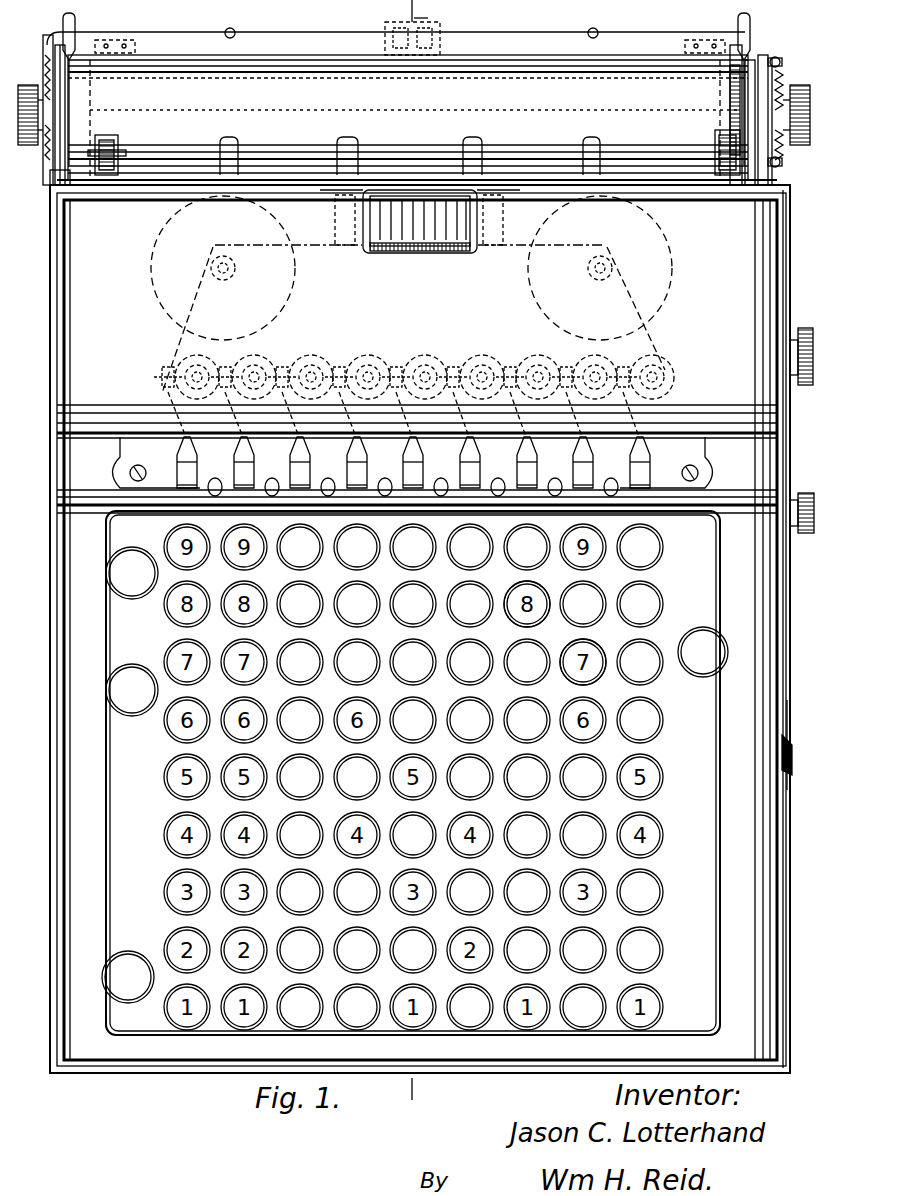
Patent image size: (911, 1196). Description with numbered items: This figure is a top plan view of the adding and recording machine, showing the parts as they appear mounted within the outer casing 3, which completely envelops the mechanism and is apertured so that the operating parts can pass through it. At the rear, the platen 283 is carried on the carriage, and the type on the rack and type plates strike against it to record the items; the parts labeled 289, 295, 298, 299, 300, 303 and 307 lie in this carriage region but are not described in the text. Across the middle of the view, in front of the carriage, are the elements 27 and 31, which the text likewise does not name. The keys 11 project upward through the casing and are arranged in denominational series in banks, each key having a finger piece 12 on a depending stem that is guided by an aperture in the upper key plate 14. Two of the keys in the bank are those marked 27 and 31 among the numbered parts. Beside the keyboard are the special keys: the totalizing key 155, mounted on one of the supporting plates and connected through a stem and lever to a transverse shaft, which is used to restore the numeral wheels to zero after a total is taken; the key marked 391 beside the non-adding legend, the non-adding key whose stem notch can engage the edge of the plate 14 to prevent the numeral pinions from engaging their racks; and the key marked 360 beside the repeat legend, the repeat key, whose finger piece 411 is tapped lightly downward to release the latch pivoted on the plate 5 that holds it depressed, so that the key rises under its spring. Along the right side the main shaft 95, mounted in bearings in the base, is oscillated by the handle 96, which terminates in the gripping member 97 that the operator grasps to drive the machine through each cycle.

The outer casing 3 is at (778, 897).
The supporting plate 5 is at (412, 563).
The keys 11 is at (370, 611).
The finger piece 12 is at (566, 618).
The upper key plate 14 is at (700, 746).
The key 27 is at (426, 669).
The type bars 31 is at (403, 470).
The main shaft 95 is at (782, 752).
The handle 96 is at (786, 645).
The gripping member 97 is at (808, 493).
The totalizing key 155 is at (140, 942).
The platen 283 is at (412, 104).
The carriage end frame 289 is at (735, 118).
The paper guides 295 is at (300, 138).
The clamp 298 is at (140, 135).
The screws 299 is at (782, 60).
The carriage end plate 300 is at (44, 115).
The spring 303 is at (783, 78).
The release lever 307 is at (738, 20).
The repeat key 360 is at (689, 620).
The non-adding key 391 is at (125, 626).
The finger piece 411 is at (125, 742).